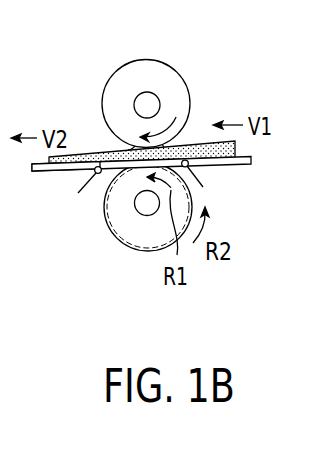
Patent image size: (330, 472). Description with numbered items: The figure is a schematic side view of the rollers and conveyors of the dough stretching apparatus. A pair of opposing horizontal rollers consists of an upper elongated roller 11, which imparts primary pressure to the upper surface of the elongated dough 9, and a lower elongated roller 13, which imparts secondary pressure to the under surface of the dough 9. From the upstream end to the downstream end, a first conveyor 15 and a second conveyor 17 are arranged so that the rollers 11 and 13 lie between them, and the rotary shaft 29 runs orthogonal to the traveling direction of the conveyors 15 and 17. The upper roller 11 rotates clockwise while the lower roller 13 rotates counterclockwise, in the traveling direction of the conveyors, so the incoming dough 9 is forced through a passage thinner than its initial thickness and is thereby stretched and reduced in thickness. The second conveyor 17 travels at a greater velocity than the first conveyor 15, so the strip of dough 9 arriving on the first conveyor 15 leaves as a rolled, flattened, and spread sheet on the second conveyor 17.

The elongated dough 9 is at (201, 142).
The upper elongated roller 11 is at (120, 67).
The lower elongated roller 13 is at (138, 240).
The first conveyor 15 is at (251, 160).
The second conveyor 17 is at (42, 173).
The rotary shaft 29 is at (140, 202).